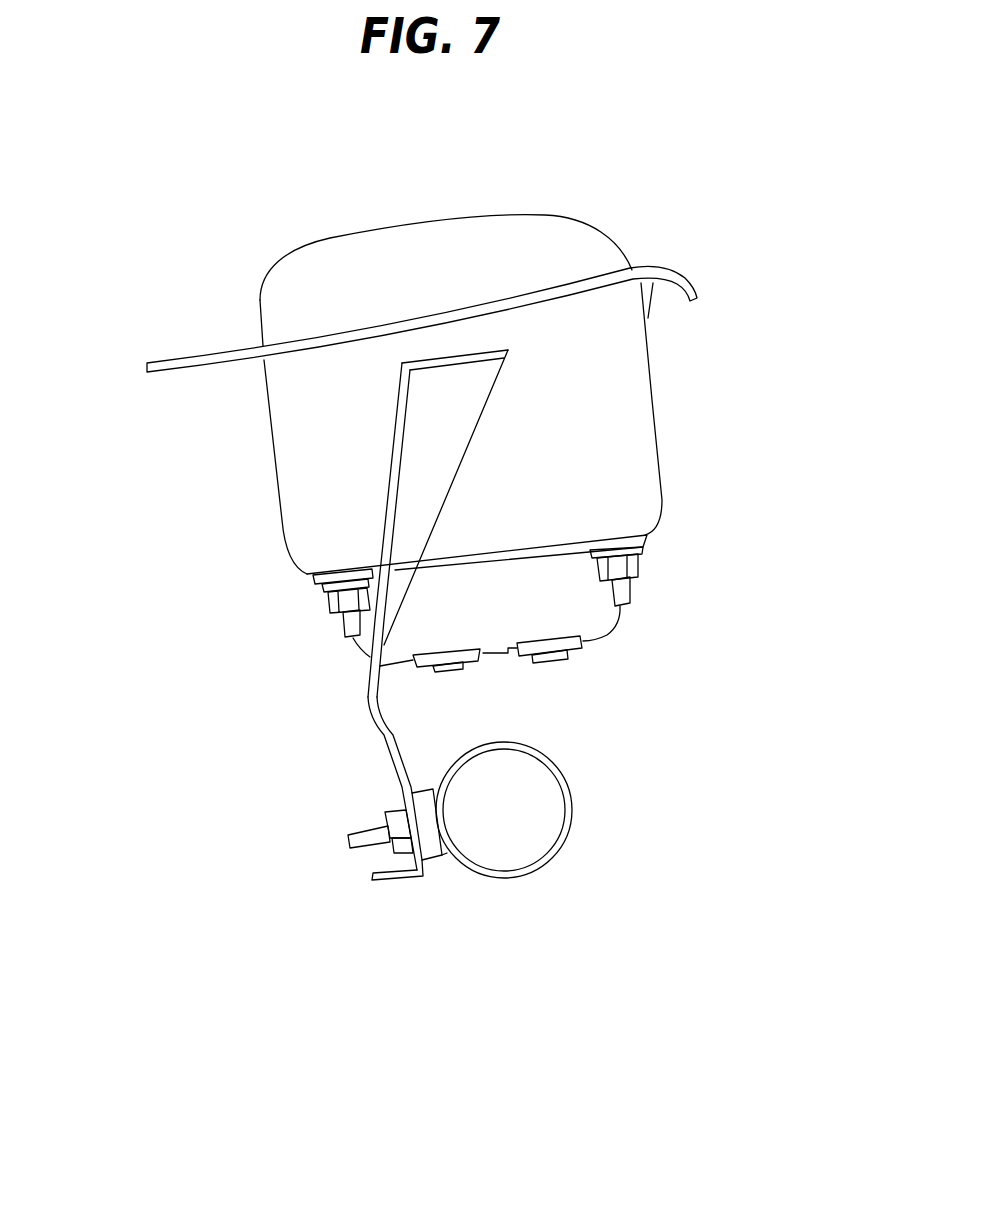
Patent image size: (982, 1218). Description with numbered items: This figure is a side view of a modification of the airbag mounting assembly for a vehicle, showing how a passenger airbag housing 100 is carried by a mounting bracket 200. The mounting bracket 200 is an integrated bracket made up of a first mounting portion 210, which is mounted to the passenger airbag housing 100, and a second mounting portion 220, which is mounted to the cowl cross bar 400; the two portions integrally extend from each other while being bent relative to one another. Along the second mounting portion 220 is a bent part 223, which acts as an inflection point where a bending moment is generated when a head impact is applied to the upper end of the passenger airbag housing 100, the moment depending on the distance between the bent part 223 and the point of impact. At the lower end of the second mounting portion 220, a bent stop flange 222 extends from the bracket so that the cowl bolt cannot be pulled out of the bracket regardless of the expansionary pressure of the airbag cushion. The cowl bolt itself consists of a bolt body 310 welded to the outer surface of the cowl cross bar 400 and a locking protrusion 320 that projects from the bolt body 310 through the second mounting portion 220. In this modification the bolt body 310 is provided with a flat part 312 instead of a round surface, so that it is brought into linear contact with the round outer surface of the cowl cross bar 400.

The passenger airbag housing 100 is at (640, 413).
The mounting bracket 200 is at (123, 523).
The first mounting portion 210 is at (423, 493).
The second mounting portion 220 is at (344, 637).
The bent stop flange 222 is at (397, 873).
The bent part 223 is at (368, 698).
The bolt body 310 is at (447, 860).
The flat part 312 is at (447, 853).
The locking protrusion 320 is at (348, 842).
The cowl cross bar 400 is at (568, 795).